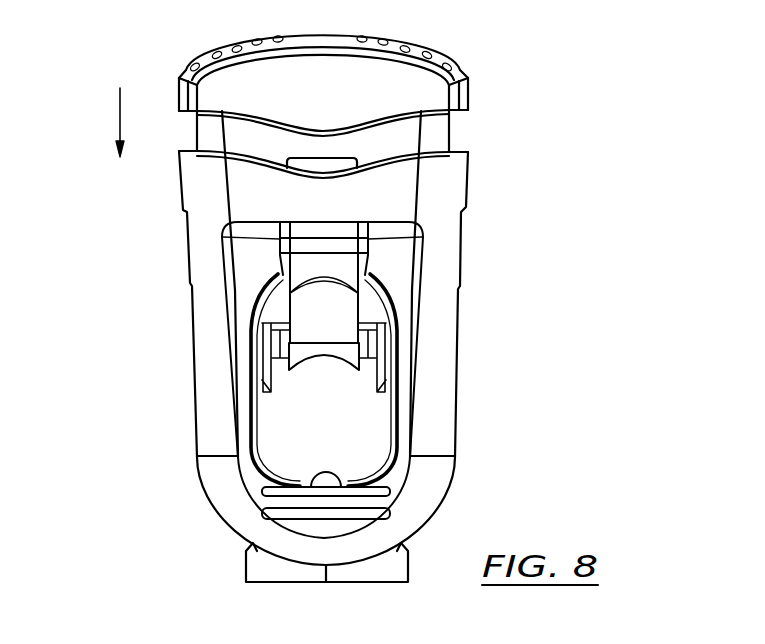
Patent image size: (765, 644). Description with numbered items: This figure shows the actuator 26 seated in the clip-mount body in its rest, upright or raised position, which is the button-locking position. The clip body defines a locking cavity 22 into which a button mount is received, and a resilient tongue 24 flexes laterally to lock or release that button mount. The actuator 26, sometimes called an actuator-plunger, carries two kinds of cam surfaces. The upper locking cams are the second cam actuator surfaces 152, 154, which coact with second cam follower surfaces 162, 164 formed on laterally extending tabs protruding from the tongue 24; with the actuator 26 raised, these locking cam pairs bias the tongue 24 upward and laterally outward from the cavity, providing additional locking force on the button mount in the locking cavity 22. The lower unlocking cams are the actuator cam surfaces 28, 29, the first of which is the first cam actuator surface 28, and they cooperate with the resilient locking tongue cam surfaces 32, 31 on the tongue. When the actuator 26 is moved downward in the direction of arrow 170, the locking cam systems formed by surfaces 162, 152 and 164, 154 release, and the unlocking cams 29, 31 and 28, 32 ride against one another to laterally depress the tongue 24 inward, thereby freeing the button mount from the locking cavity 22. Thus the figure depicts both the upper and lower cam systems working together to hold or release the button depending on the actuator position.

The locking cavity 22 is at (333, 443).
The resilient tongue 24 is at (369, 314).
The actuator 26 is at (469, 90).
The first cam actuator surface 28 is at (249, 326).
The actuator cam surface 29 is at (398, 324).
The resilient locking tongue cam surface 31 is at (380, 338).
The tongue cam surface 32 is at (268, 340).
The second cam actuator surface 152 is at (368, 255).
The second cam actuator surface 154 is at (280, 254).
The second cam follower surface 162 is at (416, 232).
The second cam follower surface 164 is at (230, 232).
The arrow 170 is at (119, 114).